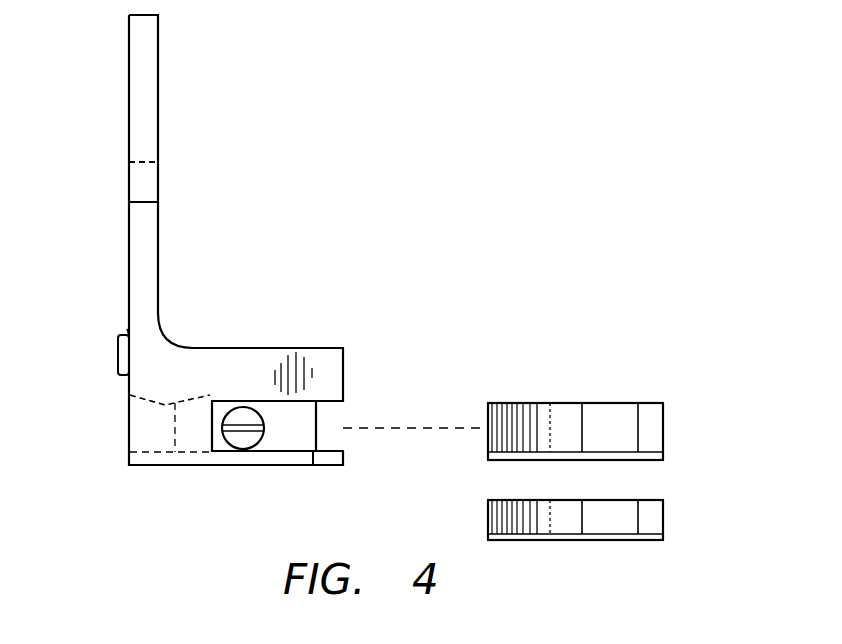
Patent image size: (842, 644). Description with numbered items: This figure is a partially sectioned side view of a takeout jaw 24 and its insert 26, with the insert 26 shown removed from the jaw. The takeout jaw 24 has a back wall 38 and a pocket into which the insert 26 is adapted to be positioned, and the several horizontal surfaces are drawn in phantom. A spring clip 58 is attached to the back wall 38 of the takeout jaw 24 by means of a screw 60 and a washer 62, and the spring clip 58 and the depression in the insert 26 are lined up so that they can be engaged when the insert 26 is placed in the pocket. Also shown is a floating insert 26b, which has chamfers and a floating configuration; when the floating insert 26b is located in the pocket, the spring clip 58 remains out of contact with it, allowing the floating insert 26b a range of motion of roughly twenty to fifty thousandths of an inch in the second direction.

The takeout jaw 24 is at (207, 315).
The insert 26 is at (615, 378).
The floating insert 26b is at (670, 512).
The back wall 38 is at (129, 205).
The spring clip 58 is at (165, 405).
The screw 60 is at (118, 360).
The washer 62 is at (127, 330).